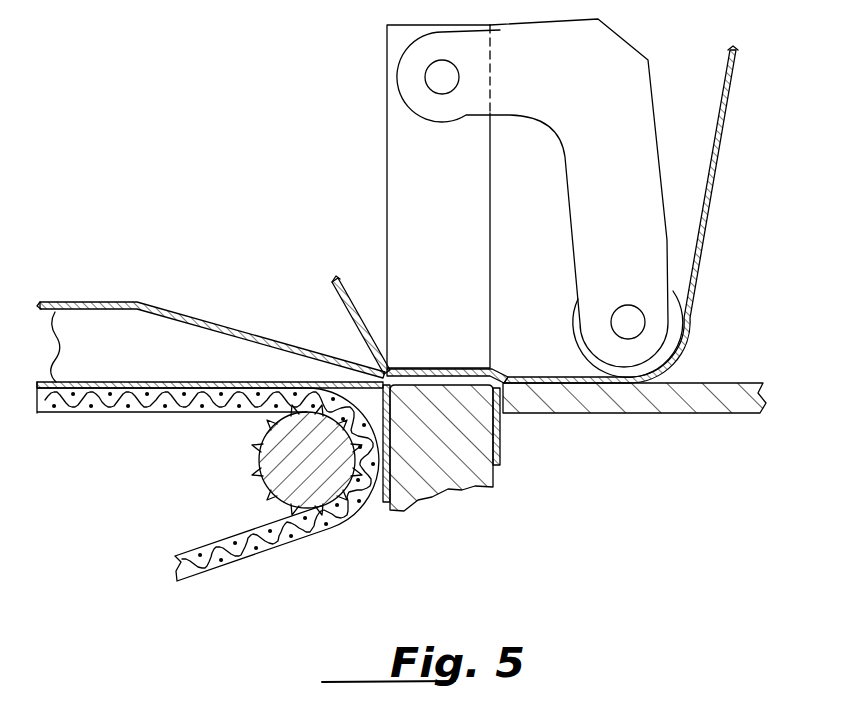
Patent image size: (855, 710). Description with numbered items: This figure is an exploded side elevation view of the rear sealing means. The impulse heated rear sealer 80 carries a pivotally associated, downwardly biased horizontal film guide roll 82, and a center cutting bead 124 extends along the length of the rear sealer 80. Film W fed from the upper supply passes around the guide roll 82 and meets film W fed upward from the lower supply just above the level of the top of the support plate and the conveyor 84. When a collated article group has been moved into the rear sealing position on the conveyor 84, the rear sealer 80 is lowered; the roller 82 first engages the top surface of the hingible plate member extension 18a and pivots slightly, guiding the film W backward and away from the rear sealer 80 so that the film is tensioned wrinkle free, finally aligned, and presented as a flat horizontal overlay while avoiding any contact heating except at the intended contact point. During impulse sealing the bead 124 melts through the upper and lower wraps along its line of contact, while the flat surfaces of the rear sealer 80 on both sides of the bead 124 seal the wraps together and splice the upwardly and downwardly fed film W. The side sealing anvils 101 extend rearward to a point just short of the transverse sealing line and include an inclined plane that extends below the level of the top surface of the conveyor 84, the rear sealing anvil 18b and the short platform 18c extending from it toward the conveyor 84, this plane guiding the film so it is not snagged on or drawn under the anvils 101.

The rear sealer 80 is at (405, 262).
The horizontal film guide roll 82 is at (573, 317).
The center cutting bead 124 is at (442, 370).
The side sealing anvil 101 is at (134, 347).
The film W is at (45, 302).
The hingible plate member extension 18a is at (700, 398).
The rear sealing anvil 18b is at (478, 478).
The short platform 18c is at (420, 450).
The conveyor 84 is at (223, 552).